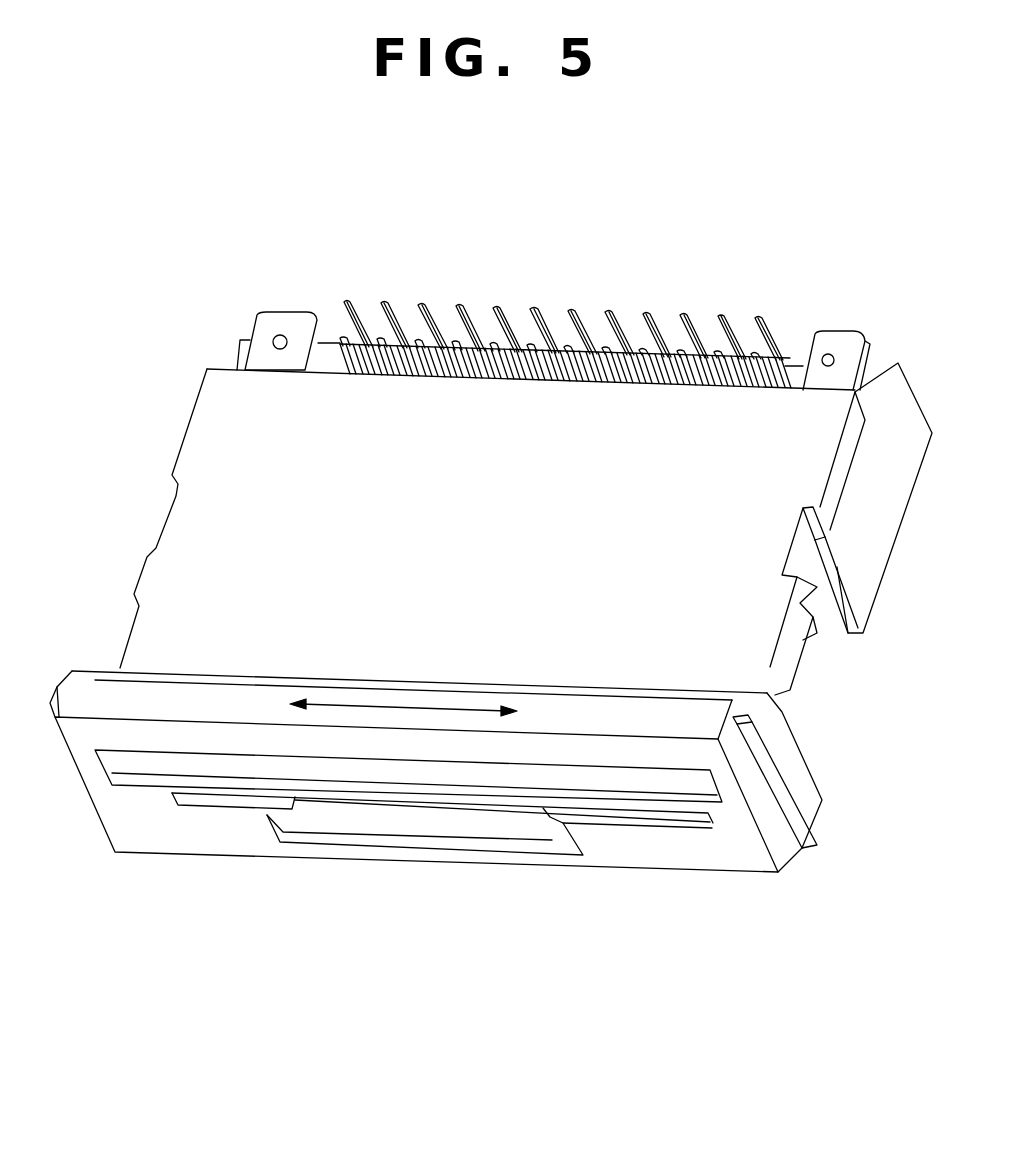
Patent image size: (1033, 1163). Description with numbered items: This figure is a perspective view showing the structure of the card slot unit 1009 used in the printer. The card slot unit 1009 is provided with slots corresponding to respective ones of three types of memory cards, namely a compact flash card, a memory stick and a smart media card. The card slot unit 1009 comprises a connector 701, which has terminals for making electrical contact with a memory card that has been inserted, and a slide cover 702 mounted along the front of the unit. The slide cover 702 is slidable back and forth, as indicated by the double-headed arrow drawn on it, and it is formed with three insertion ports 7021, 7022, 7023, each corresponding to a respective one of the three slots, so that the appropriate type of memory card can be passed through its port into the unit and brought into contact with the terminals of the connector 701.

The card slot unit 1009 is at (166, 378).
The connector 701 is at (880, 368).
The slide cover 702 is at (103, 690).
The insertion port 7021 is at (458, 777).
The insertion port 7022 is at (337, 828).
The insertion port 7023 is at (218, 800).